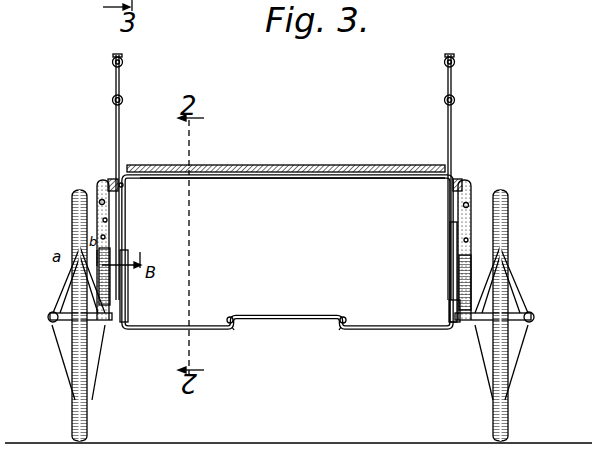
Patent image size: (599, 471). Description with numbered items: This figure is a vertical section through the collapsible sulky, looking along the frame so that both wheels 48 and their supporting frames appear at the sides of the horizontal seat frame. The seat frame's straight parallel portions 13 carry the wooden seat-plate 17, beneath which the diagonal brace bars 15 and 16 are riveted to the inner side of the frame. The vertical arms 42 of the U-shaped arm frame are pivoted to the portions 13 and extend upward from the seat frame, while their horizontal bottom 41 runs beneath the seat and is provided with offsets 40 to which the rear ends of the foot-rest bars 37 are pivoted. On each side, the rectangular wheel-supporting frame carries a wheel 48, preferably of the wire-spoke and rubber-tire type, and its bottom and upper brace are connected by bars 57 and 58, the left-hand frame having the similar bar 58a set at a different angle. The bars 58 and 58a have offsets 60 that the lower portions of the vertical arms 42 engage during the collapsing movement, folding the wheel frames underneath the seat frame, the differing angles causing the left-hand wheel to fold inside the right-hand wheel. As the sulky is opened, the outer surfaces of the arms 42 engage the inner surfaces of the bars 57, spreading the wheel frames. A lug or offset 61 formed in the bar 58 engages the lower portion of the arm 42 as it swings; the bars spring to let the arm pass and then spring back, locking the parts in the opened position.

The straight parallel portions 13 is at (113, 188).
The diagonal brace bar 15 is at (357, 179).
The diagonal brace bar 16 is at (209, 179).
The wooden seat-plate 17 is at (267, 165).
The foot-rest bar 37 is at (231, 315).
The offset 40 is at (236, 329).
The horizontal bottom 41 is at (293, 315).
The vertical arm 42 is at (120, 167).
The wheel 48 is at (80, 247).
The bar 57 is at (108, 273).
The bar 58 is at (453, 260).
The bar 58a is at (125, 254).
The offset 60 is at (450, 222).
The lug or offset 61 is at (450, 296).